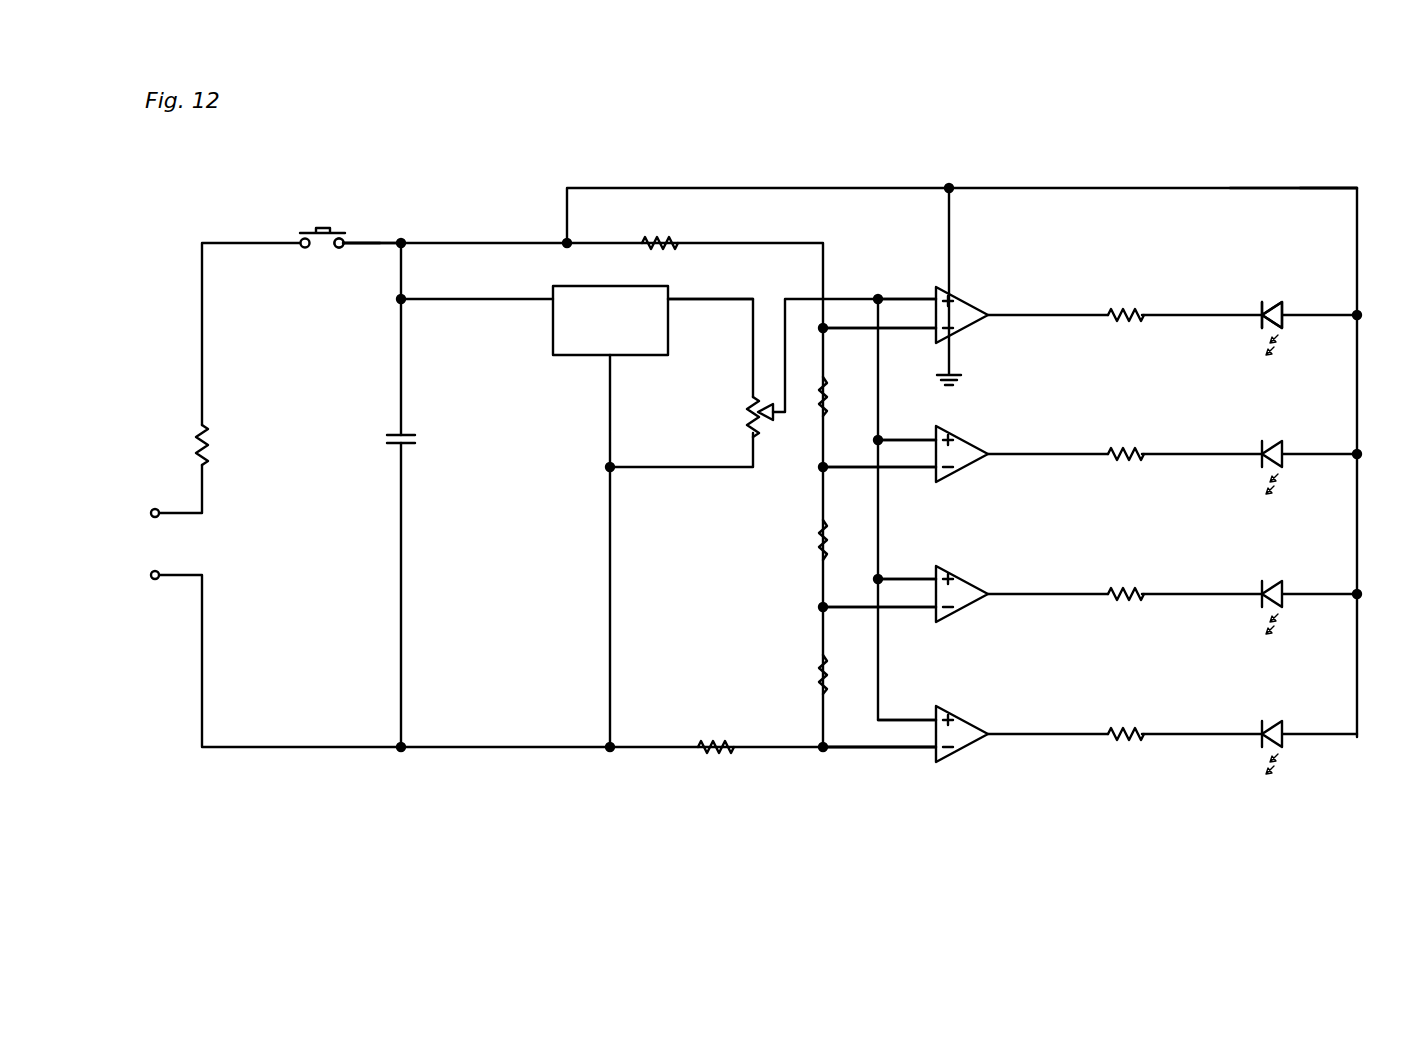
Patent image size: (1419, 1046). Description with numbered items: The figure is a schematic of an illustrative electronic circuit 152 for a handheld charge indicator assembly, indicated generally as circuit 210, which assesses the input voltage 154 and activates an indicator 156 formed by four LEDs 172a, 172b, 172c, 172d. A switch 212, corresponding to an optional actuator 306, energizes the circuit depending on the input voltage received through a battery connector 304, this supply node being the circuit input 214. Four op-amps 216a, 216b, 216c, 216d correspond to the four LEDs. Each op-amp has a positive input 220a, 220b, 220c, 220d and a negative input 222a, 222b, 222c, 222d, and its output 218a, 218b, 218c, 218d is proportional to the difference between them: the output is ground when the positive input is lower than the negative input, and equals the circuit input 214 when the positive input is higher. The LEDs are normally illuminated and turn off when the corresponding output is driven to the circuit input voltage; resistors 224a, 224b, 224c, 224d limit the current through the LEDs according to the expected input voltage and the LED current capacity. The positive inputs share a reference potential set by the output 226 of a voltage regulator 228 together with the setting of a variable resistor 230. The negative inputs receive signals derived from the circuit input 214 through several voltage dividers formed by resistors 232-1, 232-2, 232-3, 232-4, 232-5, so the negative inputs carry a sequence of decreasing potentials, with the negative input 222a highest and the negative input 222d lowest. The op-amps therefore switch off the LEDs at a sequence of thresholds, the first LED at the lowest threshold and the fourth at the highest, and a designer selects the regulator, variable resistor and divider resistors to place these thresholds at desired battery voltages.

The electronic circuit 152 is at (1325, 132).
The input voltage 154 is at (361, 248).
The indicator 156 is at (1283, 258).
The LED 172a is at (1270, 306).
The LED 172b is at (1270, 445).
The LED 172c is at (1270, 585).
The LED 172d is at (1270, 725).
The electronic circuit 210 is at (1230, 168).
The switch 212 is at (328, 230).
The circuit input 214 is at (388, 243).
The op-amp 216a is at (970, 305).
The op-amp 216b is at (970, 444).
The op-amp 216c is at (970, 584).
The op-amp 216d is at (970, 724).
The output 218a is at (1030, 320).
The output 218b is at (1030, 459).
The output 218c is at (1030, 599).
The output 218d is at (1030, 739).
The positive input 220a is at (908, 288).
The positive input 220b is at (908, 428).
The positive input 220c is at (908, 567).
The positive input 220d is at (908, 708).
The negative input 222a is at (912, 330).
The negative input 222b is at (912, 469).
The negative input 222c is at (912, 609).
The negative input 222d is at (912, 749).
The resistor 224a is at (1126, 310).
The resistor 224b is at (1126, 449).
The resistor 224c is at (1126, 589).
The resistor 224d is at (1126, 729).
The output of voltage regulator 226 is at (694, 298).
The voltage regulator 228 is at (610, 320).
The variable resistor 230 is at (748, 410).
The resistor 232-1 is at (657, 240).
The resistor 232-2 is at (812, 410).
The resistor 232-3 is at (812, 542).
The resistor 232-4 is at (812, 674).
The resistor 232-5 is at (725, 756).
The battery connector 304 is at (155, 510).
The actuator 306 is at (338, 230).